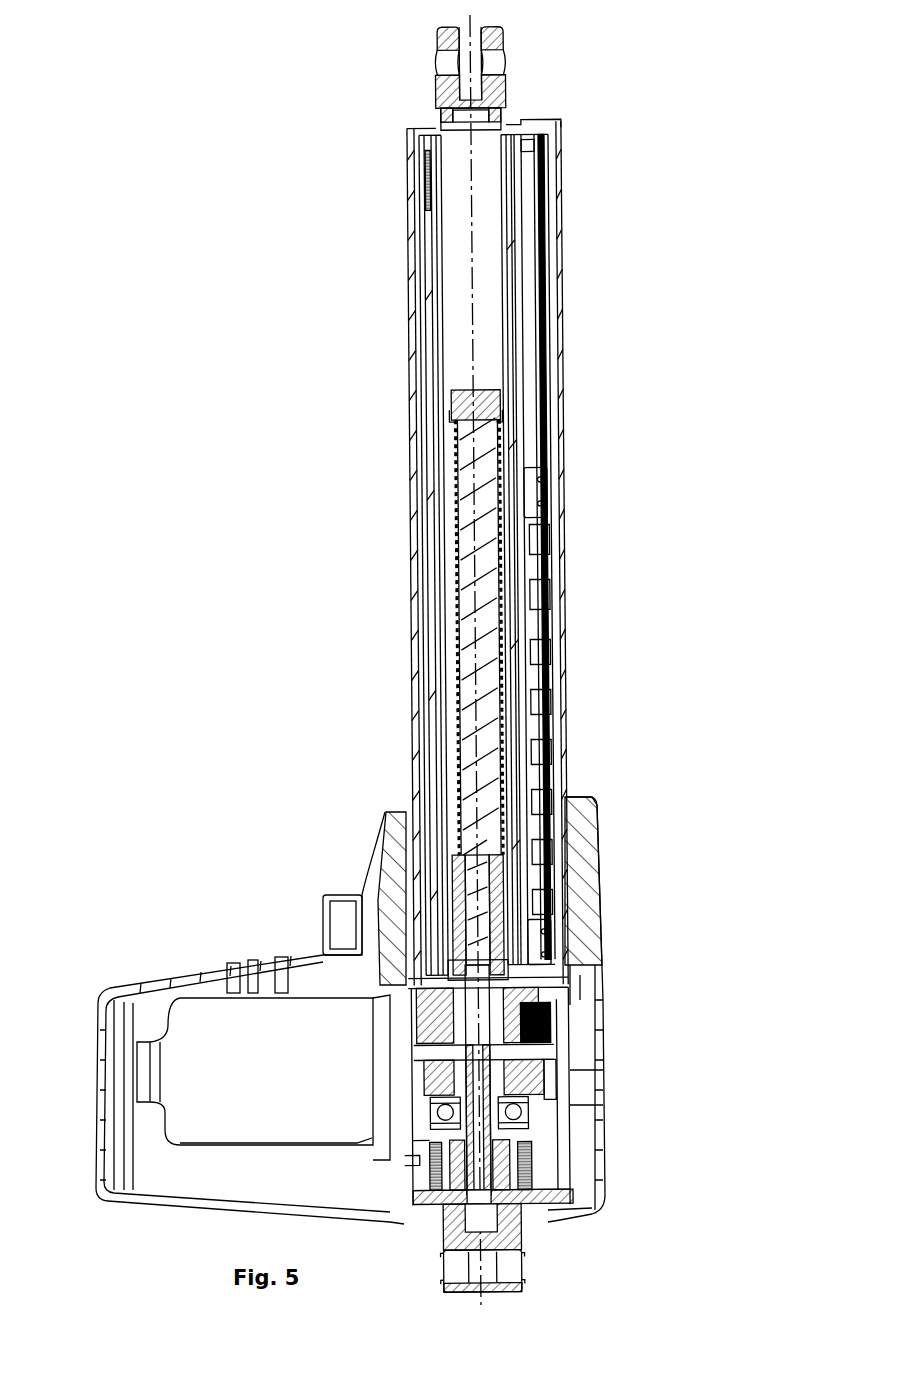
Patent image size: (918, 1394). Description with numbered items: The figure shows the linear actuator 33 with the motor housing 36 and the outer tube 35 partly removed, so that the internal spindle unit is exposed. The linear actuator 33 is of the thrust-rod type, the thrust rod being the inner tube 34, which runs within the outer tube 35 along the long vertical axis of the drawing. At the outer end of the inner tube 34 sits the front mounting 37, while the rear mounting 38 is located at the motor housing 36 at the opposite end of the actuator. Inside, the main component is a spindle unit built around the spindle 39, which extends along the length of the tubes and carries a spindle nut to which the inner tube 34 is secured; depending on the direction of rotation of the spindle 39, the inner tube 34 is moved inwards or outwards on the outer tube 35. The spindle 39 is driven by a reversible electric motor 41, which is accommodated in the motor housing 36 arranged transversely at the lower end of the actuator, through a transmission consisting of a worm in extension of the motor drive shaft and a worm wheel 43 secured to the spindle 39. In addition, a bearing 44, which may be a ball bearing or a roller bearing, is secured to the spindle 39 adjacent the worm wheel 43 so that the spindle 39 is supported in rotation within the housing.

The linear actuator 33 is at (266, 210).
The inner tube 34 is at (418, 303).
The outer tube 35 is at (410, 465).
The motor housing 36 is at (130, 985).
The front mounting 37 is at (502, 60).
The rear mounting 38 is at (495, 1270).
The spindle 39 is at (490, 428).
The electric motor 41 is at (193, 1038).
The worm wheel 43 is at (531, 1075).
The bearing 44 is at (508, 1115).